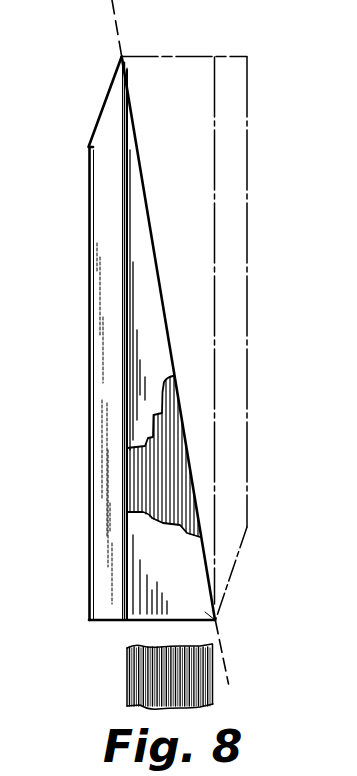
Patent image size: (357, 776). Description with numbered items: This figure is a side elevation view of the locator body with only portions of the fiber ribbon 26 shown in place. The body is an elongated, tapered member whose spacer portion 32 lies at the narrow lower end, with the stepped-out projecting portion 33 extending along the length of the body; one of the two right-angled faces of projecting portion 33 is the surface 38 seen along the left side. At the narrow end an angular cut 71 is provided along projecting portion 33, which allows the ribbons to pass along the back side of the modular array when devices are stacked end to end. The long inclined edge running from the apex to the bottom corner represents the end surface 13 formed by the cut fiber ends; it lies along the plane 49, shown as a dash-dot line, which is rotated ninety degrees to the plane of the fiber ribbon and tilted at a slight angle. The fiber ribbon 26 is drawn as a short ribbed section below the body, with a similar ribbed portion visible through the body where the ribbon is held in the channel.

The cutting plane 49 is at (115, 14).
The end surface 13 is at (138, 143).
The angular cut 71 is at (105, 97).
The surface 38 is at (108, 292).
The projecting portion 33 is at (108, 620).
The spacer portion 32 is at (197, 623).
The fiber ribbon 26 is at (129, 668).